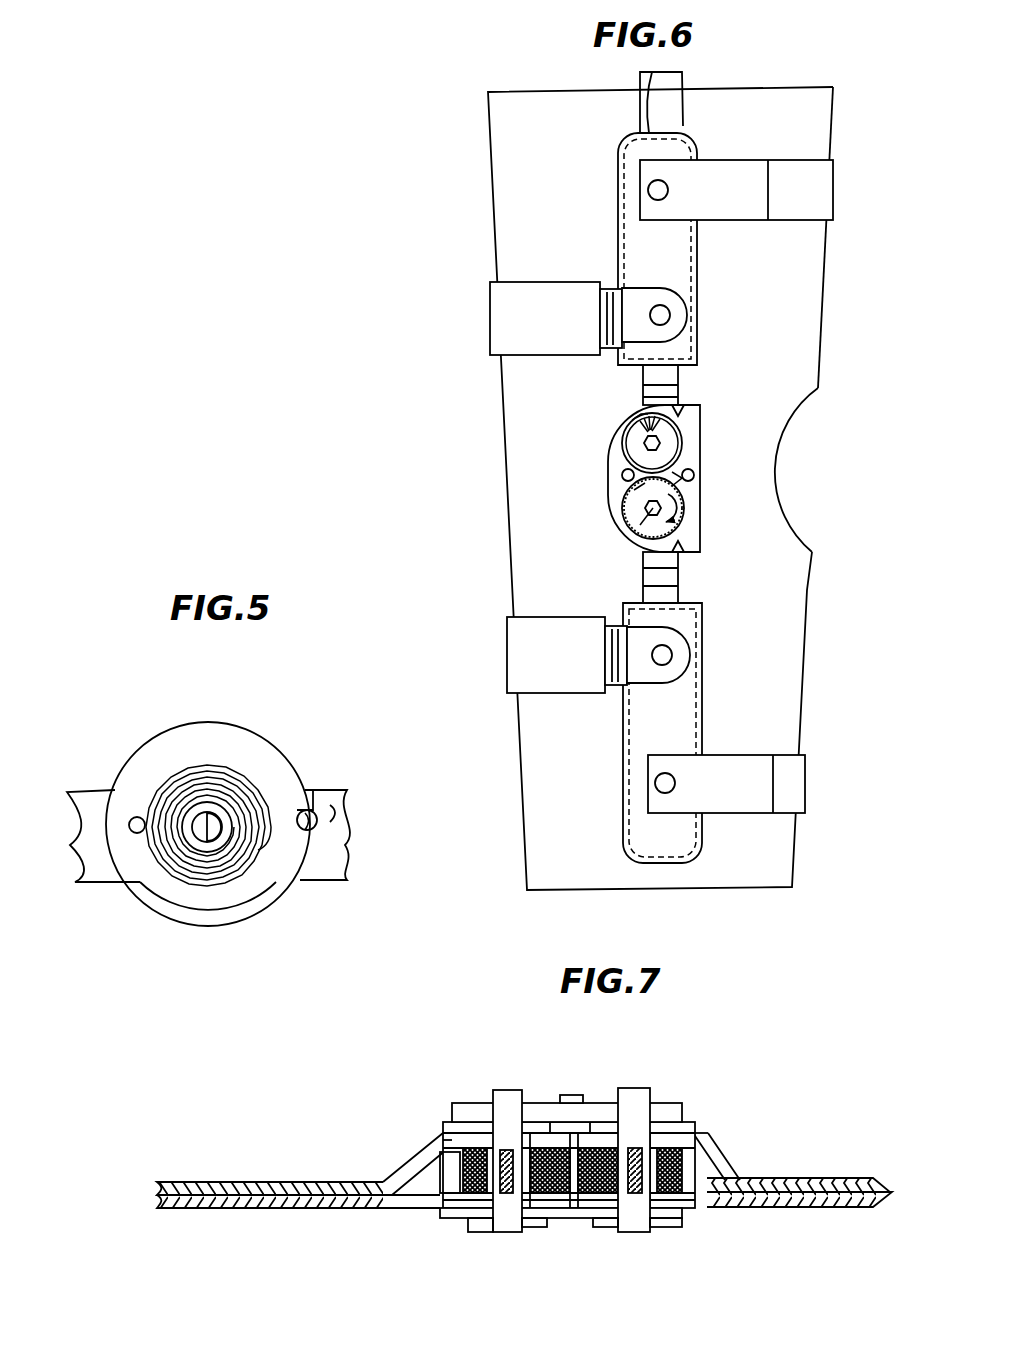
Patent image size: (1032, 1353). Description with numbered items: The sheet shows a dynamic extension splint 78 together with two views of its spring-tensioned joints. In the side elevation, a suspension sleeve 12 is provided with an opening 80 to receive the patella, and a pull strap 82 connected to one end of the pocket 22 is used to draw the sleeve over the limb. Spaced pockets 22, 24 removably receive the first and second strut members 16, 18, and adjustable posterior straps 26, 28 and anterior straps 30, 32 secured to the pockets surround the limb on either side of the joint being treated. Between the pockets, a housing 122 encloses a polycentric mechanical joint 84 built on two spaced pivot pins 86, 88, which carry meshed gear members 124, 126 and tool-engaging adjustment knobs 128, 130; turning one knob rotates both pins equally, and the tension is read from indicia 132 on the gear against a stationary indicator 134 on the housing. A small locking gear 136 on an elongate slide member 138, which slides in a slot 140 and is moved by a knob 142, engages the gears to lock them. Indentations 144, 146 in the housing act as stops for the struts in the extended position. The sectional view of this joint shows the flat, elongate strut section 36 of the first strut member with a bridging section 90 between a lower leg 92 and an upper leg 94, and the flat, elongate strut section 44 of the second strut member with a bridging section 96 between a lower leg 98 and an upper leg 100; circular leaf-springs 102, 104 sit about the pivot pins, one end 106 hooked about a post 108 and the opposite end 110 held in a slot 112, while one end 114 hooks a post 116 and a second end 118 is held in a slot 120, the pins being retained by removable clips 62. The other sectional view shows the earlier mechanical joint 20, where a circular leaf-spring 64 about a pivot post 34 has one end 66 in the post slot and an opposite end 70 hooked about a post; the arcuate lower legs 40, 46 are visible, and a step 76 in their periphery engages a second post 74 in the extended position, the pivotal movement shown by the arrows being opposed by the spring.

In FIG. 6, the suspension sleeve 12 is at (786, 661).
In FIG. 6, the first strut member 16 is at (680, 372).
In FIG. 7, the first strut member 16 is at (815, 1180).
In FIG. 6, the second strut member 18 is at (680, 589).
In FIG. 7, the second strut member 18 is at (285, 1182).
In FIG. 5, the mechanical joint 20 is at (240, 865).
In FIG. 6, the pocket 22 is at (678, 262).
In FIG. 6, the pocket 24 is at (640, 753).
In FIG. 6, the posterior strap 26 is at (502, 327).
In FIG. 6, the posterior strap 28 is at (520, 652).
In FIG. 6, the anterior strap 30 is at (822, 186).
In FIG. 6, the anterior strap 32 is at (800, 784).
In FIG. 5, the pivot post 34 is at (197, 815).
In FIG. 5, the flat, elongate strut section 36 is at (344, 872).
In FIG. 7, the flat, elongate strut section 36 is at (860, 1208).
In FIG. 5, the lower leg 40 is at (340, 890).
In FIG. 5, the flat, elongate strut section 44 is at (135, 953).
In FIG. 7, the flat, elongate strut section 44 is at (270, 1210).
In FIG. 5, the lower leg 46 is at (237, 747).
In FIG. 7, the removable clip 62 is at (522, 1225).
In FIG. 5, the circular leaf-spring 64 is at (205, 816).
In FIG. 5, the end of circular leaf-spring 66 is at (215, 818).
In FIG. 5, the opposite end of leaf-spring 70 is at (145, 842).
In FIG. 5, the second post 74 is at (137, 817).
In FIG. 5, the step 76 is at (305, 812).
In FIG. 6, the dynamic extension splint 78 is at (830, 838).
In FIG. 6, the opening 80 is at (783, 517).
In FIG. 6, the pull strap 82 is at (684, 100).
In FIG. 6, the polycentric mechanical joint 84 is at (604, 536).
In FIG. 7, the pivot pin 86 is at (500, 1226).
In FIG. 7, the pivot pin 88 is at (655, 1228).
In FIG. 7, the bridging section 90 is at (712, 1180).
In FIG. 7, the lower leg 92 is at (718, 1215).
In FIG. 7, the upper leg 94 is at (690, 1140).
In FIG. 7, the bridging section 96 is at (415, 1165).
In FIG. 7, the lower leg 98 is at (432, 1213).
In FIG. 7, the upper leg 100 is at (442, 1130).
In FIG. 7, the circular leaf-spring 102 is at (527, 1128).
In FIG. 7, the circular leaf-spring 104 is at (600, 1148).
In FIG. 7, the end of spring 106 is at (448, 1172).
In FIG. 7, the post 108 is at (420, 1210).
In FIG. 7, the opposite end of spring 110 is at (472, 1110).
In FIG. 7, the slot 112 is at (495, 1105).
In FIG. 7, the end of spring 114 is at (735, 1185).
In FIG. 7, the post 116 is at (705, 1160).
In FIG. 7, the second end of spring 118 is at (600, 1211).
In FIG. 7, the slot 120 is at (665, 1122).
In FIG. 6, the housing 122 is at (697, 423).
In FIG. 7, the housing 122 is at (452, 1125).
In FIG. 6, the gear member 124 is at (640, 458).
In FIG. 7, the gear member 124 is at (655, 1110).
In FIG. 6, the gear member 126 is at (641, 524).
In FIG. 7, the gear member 126 is at (505, 1150).
In FIG. 6, the adjustment knob 128 is at (661, 443).
In FIG. 7, the adjustment knob 128 is at (635, 1095).
In FIG. 6, the adjustment knob 130 is at (666, 534).
In FIG. 7, the adjustment knob 130 is at (512, 1090).
In FIG. 6, the indicia 132 is at (636, 430).
In FIG. 6, the stationary indicator 134 is at (648, 412).
In FIG. 6, the locking gear 136 is at (632, 486).
In FIG. 6, the slide member 138 is at (684, 486).
In FIG. 7, the slide member 138 is at (582, 1128).
In FIG. 6, the slot 140 is at (622, 479).
In FIG. 7, the slot 140 is at (535, 1140).
In FIG. 6, the knob 142 is at (694, 476).
In FIG. 7, the knob 142 is at (572, 1095).
In FIG. 6, the indentation 144 is at (679, 408).
In FIG. 6, the indentation 146 is at (678, 548).